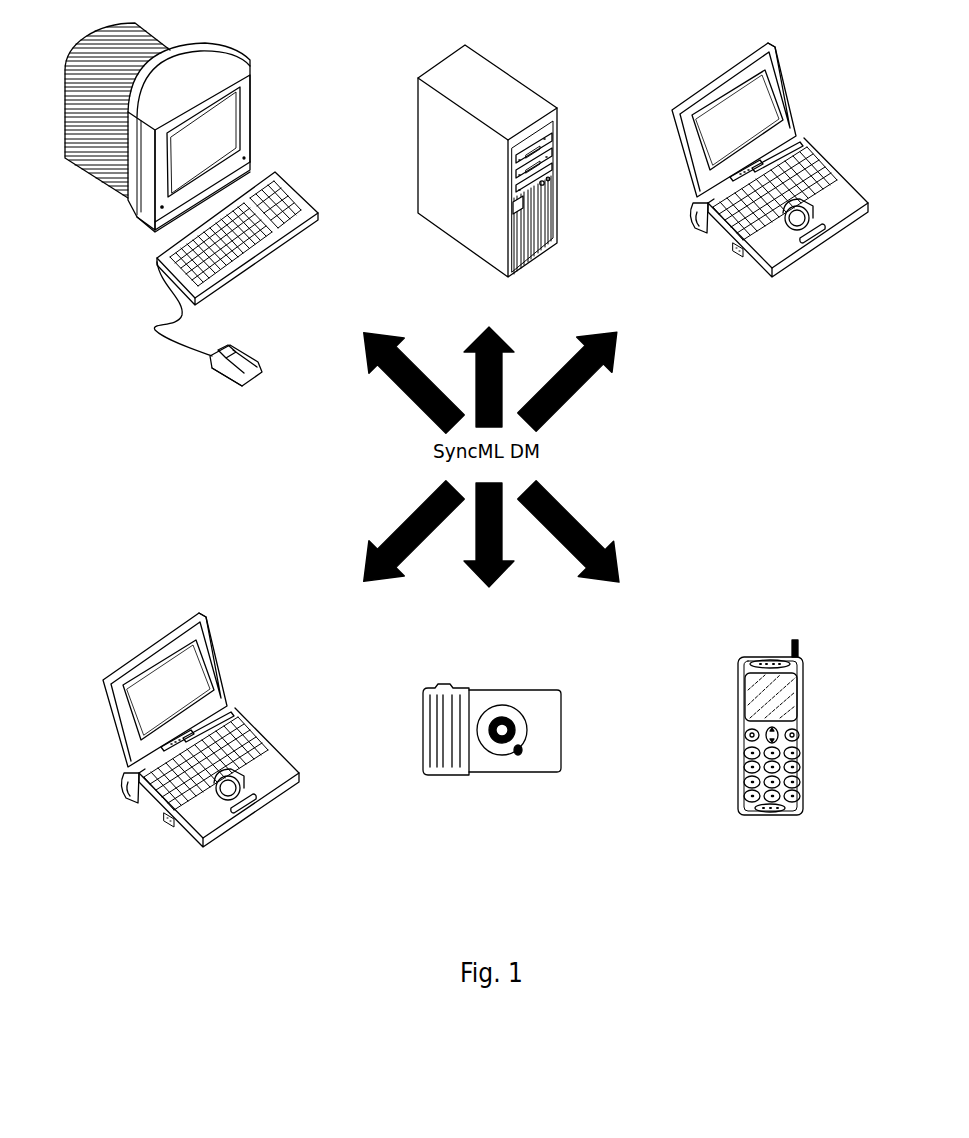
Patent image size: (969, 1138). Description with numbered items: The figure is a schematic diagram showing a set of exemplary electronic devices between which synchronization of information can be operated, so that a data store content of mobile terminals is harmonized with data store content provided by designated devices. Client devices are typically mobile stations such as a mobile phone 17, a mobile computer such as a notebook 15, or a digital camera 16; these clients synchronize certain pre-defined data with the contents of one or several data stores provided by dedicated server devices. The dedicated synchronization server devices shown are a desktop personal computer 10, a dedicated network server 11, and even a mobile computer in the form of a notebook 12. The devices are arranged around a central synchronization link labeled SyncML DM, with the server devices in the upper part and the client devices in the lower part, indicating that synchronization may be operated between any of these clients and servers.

The personal computer 10 is at (252, 50).
The dedicated network server 11 is at (496, 50).
The notebook 12 is at (791, 48).
The notebook 15 is at (300, 795).
The digital camera 16 is at (543, 786).
The mobile phone 17 is at (821, 798).